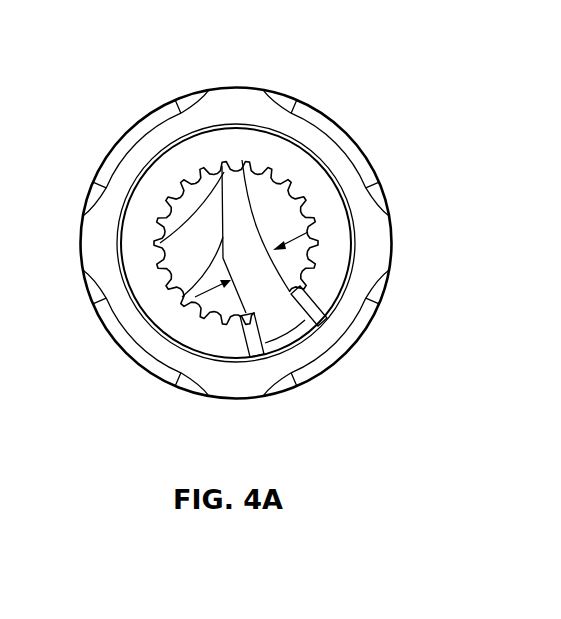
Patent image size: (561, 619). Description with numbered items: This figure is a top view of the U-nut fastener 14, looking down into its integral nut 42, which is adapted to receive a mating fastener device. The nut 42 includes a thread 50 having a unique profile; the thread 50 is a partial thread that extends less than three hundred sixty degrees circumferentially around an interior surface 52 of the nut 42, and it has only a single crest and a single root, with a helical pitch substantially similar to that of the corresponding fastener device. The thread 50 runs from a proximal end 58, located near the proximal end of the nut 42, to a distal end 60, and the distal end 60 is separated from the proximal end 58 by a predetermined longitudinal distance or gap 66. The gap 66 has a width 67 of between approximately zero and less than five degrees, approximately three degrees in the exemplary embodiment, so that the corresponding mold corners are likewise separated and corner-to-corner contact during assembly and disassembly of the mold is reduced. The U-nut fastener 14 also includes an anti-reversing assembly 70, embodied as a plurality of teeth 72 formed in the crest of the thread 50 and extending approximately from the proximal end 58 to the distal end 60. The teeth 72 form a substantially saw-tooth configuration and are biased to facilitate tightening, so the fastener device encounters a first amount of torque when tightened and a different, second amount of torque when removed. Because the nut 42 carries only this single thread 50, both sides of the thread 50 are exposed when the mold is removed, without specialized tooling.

The U-nut fastener 14 is at (380, 241).
The nut 42 is at (320, 152).
The thread 50 is at (320, 310).
The interior surface 52 is at (163, 177).
The proximal end 58 is at (286, 331).
The distal end 60 is at (322, 294).
The gap 66 is at (293, 345).
The width 67 is at (294, 232).
The anti-reversing assembly 70 is at (242, 160).
The teeth 72 is at (226, 166).